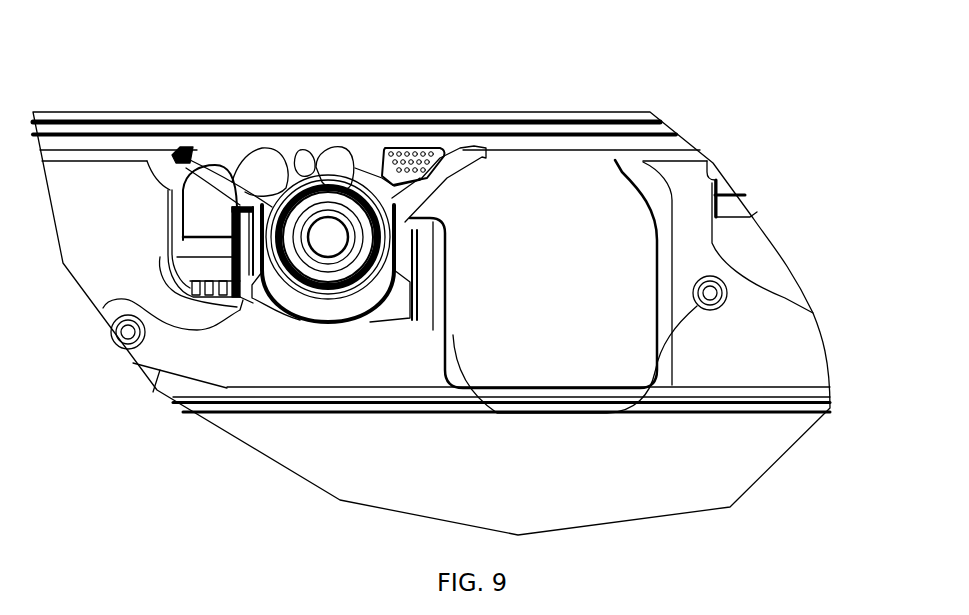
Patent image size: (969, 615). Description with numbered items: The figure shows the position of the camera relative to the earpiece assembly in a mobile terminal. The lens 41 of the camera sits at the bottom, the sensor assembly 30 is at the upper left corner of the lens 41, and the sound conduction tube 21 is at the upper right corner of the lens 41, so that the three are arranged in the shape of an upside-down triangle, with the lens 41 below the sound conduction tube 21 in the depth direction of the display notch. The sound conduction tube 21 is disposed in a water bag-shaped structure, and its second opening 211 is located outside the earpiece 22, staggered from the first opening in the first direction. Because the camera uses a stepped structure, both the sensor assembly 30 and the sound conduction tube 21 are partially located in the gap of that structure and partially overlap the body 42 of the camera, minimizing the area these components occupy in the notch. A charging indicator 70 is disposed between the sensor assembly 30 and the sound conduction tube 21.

The sound conduction tube 21 is at (593, 195).
The second opening 211 is at (446, 150).
The earpiece 22 is at (713, 290).
The sensor assembly 30 is at (273, 171).
The lens 41 is at (357, 164).
The body 42 is at (262, 305).
The charging indicator 70 is at (355, 212).